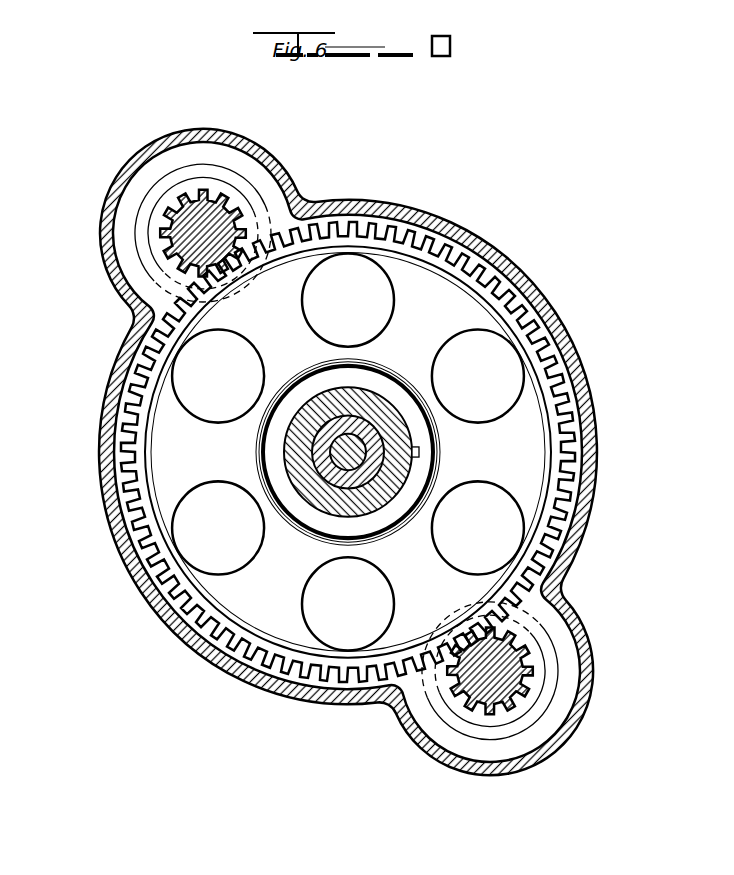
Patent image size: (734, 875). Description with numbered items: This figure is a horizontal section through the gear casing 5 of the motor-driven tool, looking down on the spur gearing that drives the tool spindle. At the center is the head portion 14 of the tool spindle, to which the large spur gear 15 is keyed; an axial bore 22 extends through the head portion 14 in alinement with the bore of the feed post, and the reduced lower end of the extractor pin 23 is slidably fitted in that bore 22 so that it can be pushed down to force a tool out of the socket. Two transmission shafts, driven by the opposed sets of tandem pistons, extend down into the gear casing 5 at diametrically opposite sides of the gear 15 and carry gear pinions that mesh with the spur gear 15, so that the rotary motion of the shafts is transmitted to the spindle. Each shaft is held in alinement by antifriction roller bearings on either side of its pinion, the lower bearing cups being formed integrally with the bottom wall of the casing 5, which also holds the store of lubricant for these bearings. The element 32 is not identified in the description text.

The gear casing 5 is at (140, 590).
The large spur gear 15 is at (250, 613).
The head portion 14 is at (398, 469).
The axial bore 22 is at (331, 455).
The extractor pin 23 is at (367, 420).
The bearing ring 32 is at (330, 497).